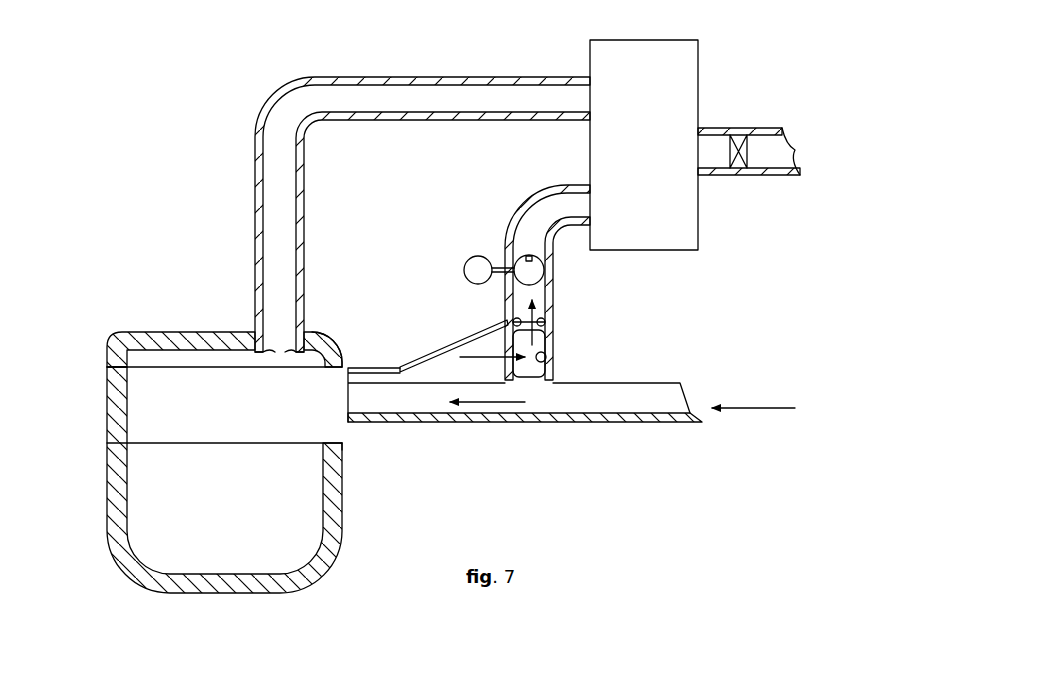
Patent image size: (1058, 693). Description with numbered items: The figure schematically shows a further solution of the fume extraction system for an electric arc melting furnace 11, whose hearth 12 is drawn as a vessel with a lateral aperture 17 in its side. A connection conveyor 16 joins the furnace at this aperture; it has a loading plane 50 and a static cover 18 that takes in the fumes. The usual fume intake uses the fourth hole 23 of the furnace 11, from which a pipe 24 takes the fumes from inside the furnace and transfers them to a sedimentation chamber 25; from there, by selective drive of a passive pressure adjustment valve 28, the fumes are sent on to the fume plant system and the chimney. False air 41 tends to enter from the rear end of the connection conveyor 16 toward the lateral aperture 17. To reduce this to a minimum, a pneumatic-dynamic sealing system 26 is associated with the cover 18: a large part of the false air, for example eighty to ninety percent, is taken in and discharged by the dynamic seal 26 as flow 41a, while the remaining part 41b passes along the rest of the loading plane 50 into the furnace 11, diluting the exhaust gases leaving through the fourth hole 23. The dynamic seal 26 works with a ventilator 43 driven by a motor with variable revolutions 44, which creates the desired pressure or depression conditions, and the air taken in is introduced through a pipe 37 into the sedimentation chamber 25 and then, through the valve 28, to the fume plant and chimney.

The electric arc melting furnace 11 is at (90, 409).
The hearth 12 is at (330, 528).
The connection conveyor 16 is at (439, 435).
The lateral aperture 17 is at (330, 400).
The static cover 18 is at (432, 362).
The fourth hole 23 is at (284, 348).
The pipe 24 is at (410, 80).
The sedimentation chamber 25 is at (683, 70).
The pneumatic-dynamic sealing system 26 is at (546, 357).
The passive pressure adjustment valve 28 is at (736, 150).
The pipe 37 is at (548, 196).
The false air 41 is at (752, 405).
The false air discharged by the dynamic seal 41a is at (515, 320).
The remaining part of the false air 41b is at (508, 402).
The ventilator 43 is at (520, 262).
The motor with variable revolutions 44 is at (473, 264).
The loading plane 50 is at (590, 422).